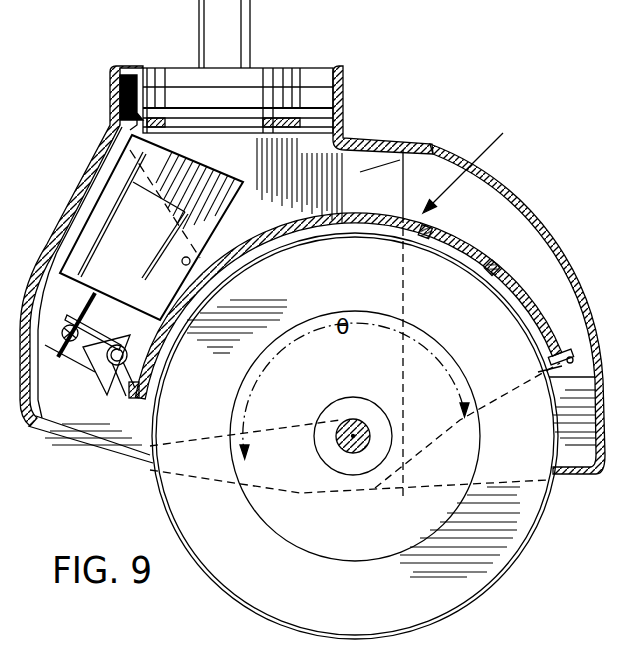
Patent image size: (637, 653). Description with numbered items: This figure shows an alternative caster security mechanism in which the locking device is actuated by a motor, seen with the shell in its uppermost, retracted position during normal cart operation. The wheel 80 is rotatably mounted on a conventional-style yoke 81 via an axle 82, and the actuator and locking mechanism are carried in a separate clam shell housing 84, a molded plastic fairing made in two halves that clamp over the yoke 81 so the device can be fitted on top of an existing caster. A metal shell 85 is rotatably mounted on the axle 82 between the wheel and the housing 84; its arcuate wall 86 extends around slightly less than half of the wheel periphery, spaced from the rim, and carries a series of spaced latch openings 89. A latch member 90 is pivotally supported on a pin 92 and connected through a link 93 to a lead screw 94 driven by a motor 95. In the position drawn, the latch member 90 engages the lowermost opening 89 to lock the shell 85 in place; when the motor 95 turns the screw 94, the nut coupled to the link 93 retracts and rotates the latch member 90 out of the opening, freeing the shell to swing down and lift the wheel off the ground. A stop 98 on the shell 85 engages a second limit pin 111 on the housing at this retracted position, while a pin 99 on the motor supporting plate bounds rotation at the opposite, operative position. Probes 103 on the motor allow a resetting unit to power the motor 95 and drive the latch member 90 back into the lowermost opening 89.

The wheel 80 is at (500, 563).
The yoke 81 is at (375, 170).
The axle 82 is at (356, 418).
The clam shell housing 84 is at (497, 180).
The shell 85 is at (478, 163).
The arcuate wall 86 is at (450, 238).
The latch openings 89 is at (137, 403).
The latch member 90 is at (118, 440).
The pin 92 is at (127, 357).
The link 93 is at (80, 368).
The lead screw 94 is at (50, 272).
The motor 95 is at (92, 212).
The stop 98 is at (572, 352).
The pin 99 is at (190, 262).
The probes 103 is at (142, 178).
The second limit pin 111 is at (597, 376).